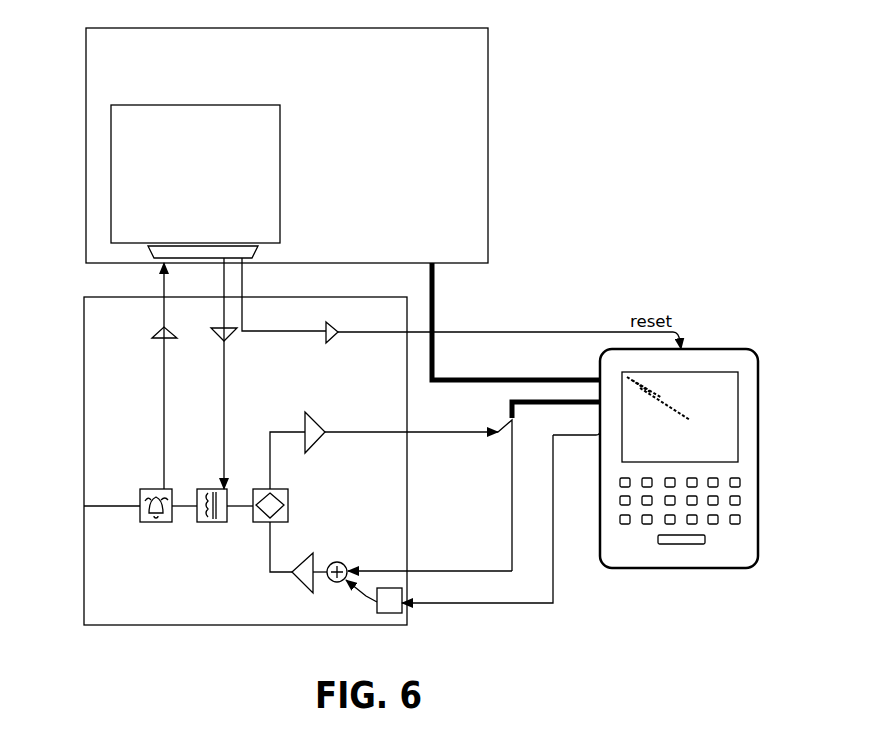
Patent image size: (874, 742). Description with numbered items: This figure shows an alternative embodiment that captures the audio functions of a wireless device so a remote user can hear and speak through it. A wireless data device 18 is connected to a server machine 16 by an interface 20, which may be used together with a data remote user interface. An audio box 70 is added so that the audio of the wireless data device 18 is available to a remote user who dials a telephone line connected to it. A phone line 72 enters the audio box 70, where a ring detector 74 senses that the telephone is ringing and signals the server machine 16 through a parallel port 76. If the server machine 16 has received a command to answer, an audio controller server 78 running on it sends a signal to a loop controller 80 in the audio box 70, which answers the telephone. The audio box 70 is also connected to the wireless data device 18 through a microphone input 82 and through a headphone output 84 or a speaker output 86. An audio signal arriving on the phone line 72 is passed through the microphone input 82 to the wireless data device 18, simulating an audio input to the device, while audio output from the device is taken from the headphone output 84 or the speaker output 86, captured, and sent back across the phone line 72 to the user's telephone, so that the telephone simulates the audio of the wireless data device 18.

The server machine 16 is at (488, 62).
The wireless data device 18 is at (672, 568).
The interface 20 is at (435, 296).
The audio box 70 is at (150, 626).
The phone line 72 is at (56, 480).
The ring detector 74 is at (148, 440).
The parallel port 76 is at (152, 254).
The audio controller server 78 is at (120, 200).
The loop controller 80 is at (212, 523).
The microphone input 82 is at (452, 434).
The headphone output 84 is at (468, 568).
The speaker output 86 is at (472, 605).